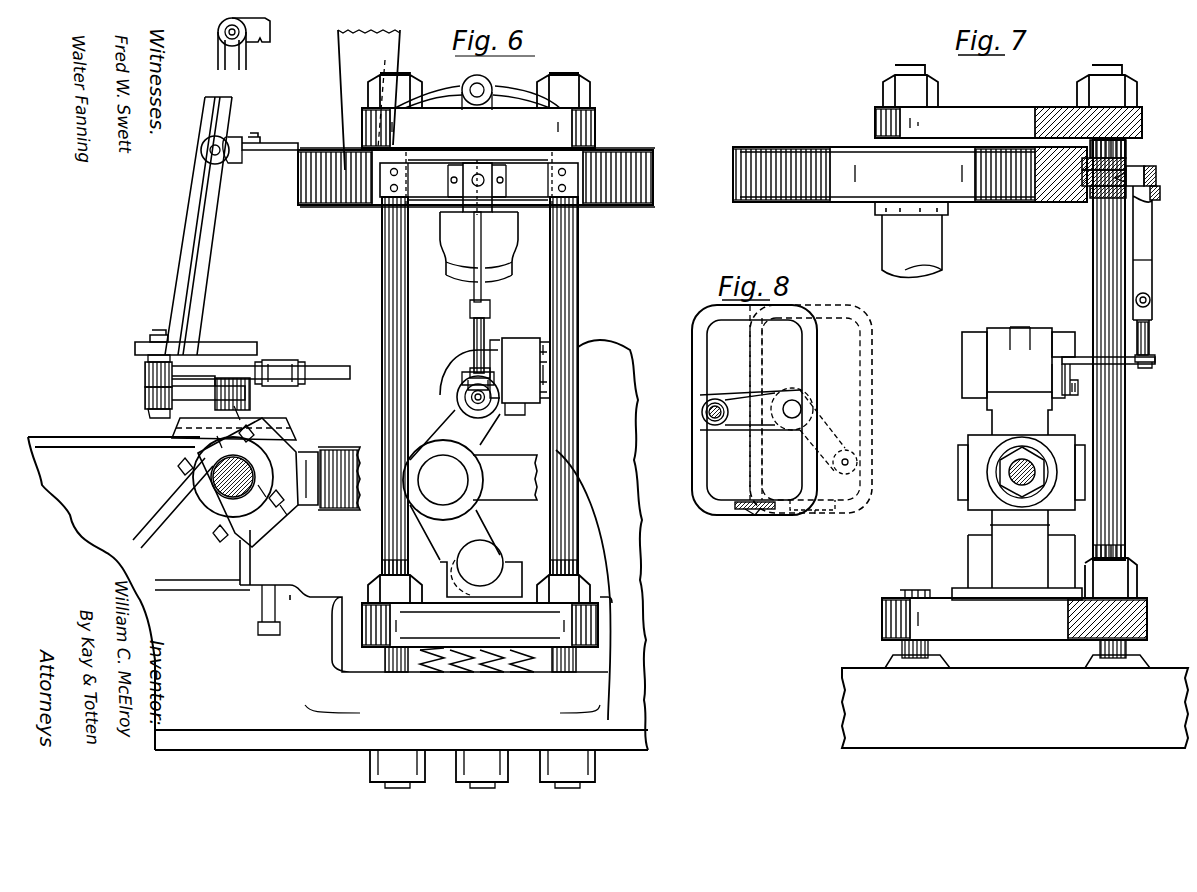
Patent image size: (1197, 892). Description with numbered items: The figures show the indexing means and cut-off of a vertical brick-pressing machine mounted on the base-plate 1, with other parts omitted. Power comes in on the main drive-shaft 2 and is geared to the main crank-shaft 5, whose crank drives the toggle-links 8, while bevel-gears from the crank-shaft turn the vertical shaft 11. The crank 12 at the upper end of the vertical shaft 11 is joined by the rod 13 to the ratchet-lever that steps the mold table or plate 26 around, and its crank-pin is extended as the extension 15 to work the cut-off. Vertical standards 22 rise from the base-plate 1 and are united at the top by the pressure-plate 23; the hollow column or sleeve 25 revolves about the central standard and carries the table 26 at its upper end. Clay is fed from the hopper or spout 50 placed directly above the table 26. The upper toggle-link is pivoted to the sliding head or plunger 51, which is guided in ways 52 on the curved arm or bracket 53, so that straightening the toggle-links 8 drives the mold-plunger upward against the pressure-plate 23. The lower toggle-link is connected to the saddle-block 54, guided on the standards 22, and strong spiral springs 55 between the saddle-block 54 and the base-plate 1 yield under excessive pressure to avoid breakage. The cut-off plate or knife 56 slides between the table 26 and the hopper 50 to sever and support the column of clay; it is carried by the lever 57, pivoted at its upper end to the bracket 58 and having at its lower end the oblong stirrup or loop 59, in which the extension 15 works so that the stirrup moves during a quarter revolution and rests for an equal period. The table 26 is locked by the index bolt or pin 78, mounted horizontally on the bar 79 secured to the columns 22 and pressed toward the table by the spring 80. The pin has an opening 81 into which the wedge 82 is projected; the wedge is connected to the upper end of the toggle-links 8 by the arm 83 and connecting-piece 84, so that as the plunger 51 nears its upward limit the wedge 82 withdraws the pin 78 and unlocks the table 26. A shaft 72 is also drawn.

In FIG. 6, the base-plate 1 is at (338, 612).
In FIG. 7, the base-plate 1 is at (1015, 708).
In FIG. 6, the main drive-shaft 2 is at (290, 440).
In FIG. 7, the main drive-shaft 2 is at (1010, 472).
In FIG. 6, the main crank-shaft 5 is at (222, 492).
In FIG. 6, the toggle-links 8 is at (462, 503).
In FIG. 7, the toggle-links 8 is at (1005, 420).
In FIG. 8, the vertical shaft 11 is at (790, 400).
In FIG. 6, the crank 12 is at (146, 398).
In FIG. 8, the crank 12 is at (750, 410).
In FIG. 6, the rod 13 is at (328, 370).
In FIG. 6, the crank-pin extension 15 is at (150, 352).
In FIG. 8, the crank-pin extension 15 is at (716, 398).
In FIG. 6, the standards 22 is at (410, 292).
In FIG. 7, the standards 22 is at (1125, 500).
In FIG. 6, the pressure-plate 23 is at (597, 118).
In FIG. 7, the pressure-plate 23 is at (875, 119).
In FIG. 7, the hollow column or sleeve 25 is at (942, 238).
In FIG. 6, the mold plate or table 26 is at (655, 178).
In FIG. 7, the mold plate or table 26 is at (910, 174).
In FIG. 6, the hopper or spout 50 is at (369, 100).
In FIG. 6, the sliding head or plunger 51 is at (473, 373).
In FIG. 7, the sliding head or plunger 51 is at (1019, 359).
In FIG. 6, the ways 52 is at (520, 376).
In FIG. 7, the ways 52 is at (962, 360).
In FIG. 6, the curved arm or bracket 53 is at (602, 545).
In FIG. 6, the saddle-block 54 is at (480, 616).
In FIG. 7, the saddle-block 54 is at (1016, 629).
In FIG. 6, the spiral springs 55 is at (505, 640).
In FIG. 6, the cut-off plate or knife 56 is at (293, 143).
In FIG. 6, the lever 57 is at (222, 240).
In FIG. 8, the lever 57 is at (748, 509).
In FIG. 6, the bracket 58 is at (262, 42).
In FIG. 6, the stirrup or loop 59 is at (240, 345).
In FIG. 8, the stirrup or loop 59 is at (815, 368).
In FIG. 6, the shaft 72 is at (505, 477).
In FIG. 6, the index bolt or pin 78 is at (481, 183).
In FIG. 7, the index bolt or pin 78 is at (1156, 178).
In FIG. 6, the bar 79 is at (433, 185).
In FIG. 7, the bar 79 is at (1160, 196).
In FIG. 7, the spring 80 is at (1120, 157).
In FIG. 7, the opening 81 is at (1126, 166).
In FIG. 6, the wedge 82 is at (483, 226).
In FIG. 7, the wedge 82 is at (1148, 210).
In FIG. 6, the arm 83 is at (472, 396).
In FIG. 7, the arm 83 is at (1100, 368).
In FIG. 6, the connecting-piece 84 is at (486, 324).
In FIG. 7, the connecting-piece 84 is at (1150, 340).